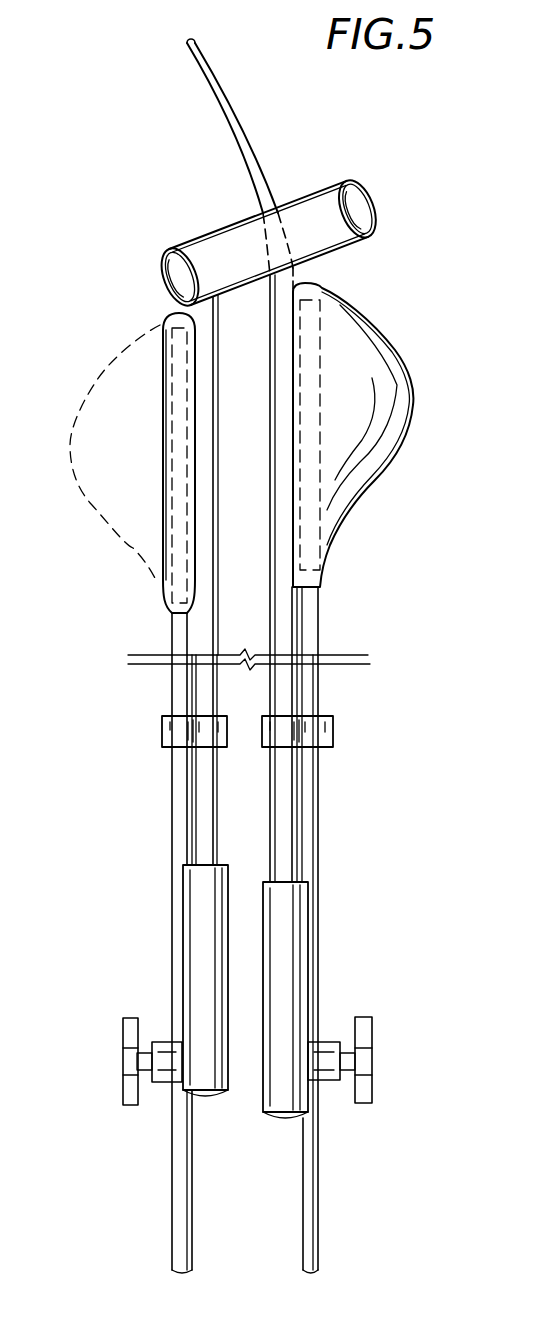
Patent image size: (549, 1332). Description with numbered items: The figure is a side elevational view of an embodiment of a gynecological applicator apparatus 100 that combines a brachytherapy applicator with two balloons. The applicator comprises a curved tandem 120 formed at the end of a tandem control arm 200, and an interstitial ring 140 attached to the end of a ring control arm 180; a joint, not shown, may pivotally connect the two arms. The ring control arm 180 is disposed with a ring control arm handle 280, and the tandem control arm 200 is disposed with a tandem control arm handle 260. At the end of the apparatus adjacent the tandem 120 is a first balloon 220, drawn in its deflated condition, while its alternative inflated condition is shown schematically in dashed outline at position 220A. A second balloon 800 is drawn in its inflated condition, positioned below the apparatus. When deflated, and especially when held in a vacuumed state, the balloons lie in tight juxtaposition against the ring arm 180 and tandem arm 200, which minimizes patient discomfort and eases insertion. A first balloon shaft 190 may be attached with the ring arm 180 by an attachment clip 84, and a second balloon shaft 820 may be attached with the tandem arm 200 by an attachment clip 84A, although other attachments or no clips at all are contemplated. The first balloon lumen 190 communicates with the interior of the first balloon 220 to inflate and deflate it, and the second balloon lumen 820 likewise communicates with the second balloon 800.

The gynecological applicator apparatus 100 is at (142, 868).
The curved tandem 120 is at (218, 97).
The interstitial ring 140 is at (373, 210).
The ring control arm 180 is at (203, 815).
The first balloon shaft 190 is at (178, 682).
The tandem control arm 200 is at (273, 400).
The first balloon 220 is at (177, 342).
The inflated position of first balloon 220A is at (92, 377).
The tandem control arm handle 260 is at (297, 965).
The ring control arm handle 280 is at (208, 1082).
The second balloon 800 is at (385, 442).
The second balloon shaft 820 is at (313, 815).
The attachment clip 84 is at (168, 733).
The attachment clip 84A is at (323, 730).